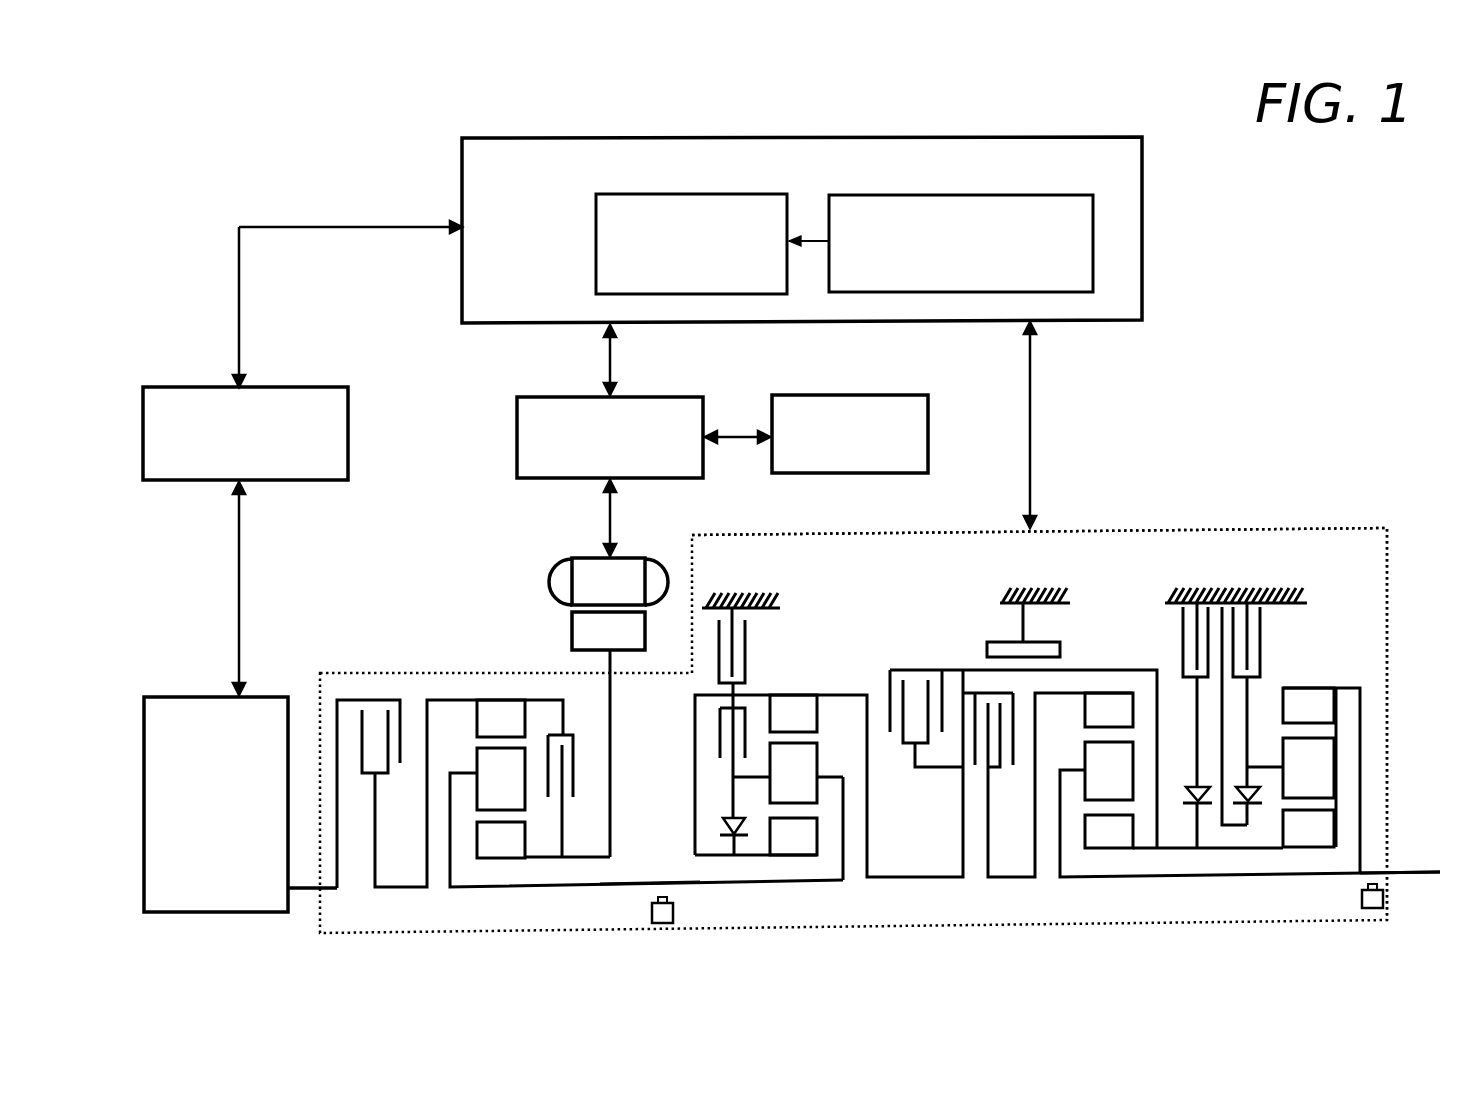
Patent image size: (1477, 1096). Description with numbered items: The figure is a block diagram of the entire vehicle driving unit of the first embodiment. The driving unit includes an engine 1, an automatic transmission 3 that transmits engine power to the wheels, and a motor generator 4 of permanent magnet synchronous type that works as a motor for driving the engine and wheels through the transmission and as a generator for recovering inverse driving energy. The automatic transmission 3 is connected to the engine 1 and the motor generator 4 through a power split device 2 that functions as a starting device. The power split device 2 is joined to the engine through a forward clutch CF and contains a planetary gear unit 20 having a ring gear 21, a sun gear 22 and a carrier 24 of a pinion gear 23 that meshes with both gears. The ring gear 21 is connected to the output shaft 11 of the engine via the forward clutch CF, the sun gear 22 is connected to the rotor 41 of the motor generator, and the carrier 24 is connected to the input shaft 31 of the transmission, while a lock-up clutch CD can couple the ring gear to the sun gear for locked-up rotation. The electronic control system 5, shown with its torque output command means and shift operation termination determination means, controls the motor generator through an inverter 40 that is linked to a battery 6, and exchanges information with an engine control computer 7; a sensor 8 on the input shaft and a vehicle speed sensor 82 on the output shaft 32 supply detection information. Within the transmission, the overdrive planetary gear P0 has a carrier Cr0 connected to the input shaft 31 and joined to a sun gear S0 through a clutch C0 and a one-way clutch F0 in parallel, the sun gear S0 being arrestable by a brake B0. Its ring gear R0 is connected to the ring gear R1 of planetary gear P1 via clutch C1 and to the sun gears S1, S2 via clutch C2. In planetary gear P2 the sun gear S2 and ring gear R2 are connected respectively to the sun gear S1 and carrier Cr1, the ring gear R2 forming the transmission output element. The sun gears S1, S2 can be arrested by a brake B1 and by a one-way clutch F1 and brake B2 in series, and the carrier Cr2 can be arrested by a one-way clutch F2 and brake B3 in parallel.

The engine 1 is at (193, 696).
The power split device 2 is at (438, 673).
The automatic transmission 3 is at (1133, 530).
The motor generator 4 is at (546, 559).
The electronic control system 5 is at (1142, 243).
The battery 6 is at (928, 418).
The engine control computer 7 is at (348, 430).
The input rotation speed sensor 8 is at (651, 915).
The output shaft 11 is at (308, 895).
The planetary gear unit 20 is at (637, 757).
The ring gear 21 is at (477, 724).
The sun gear 22 is at (527, 847).
The pinion gear 23 is at (513, 789).
The carrier 24 is at (448, 780).
The input shaft 31 is at (661, 884).
The output shaft 32 is at (1413, 878).
The inverter 40 is at (516, 432).
The rotor 41 is at (572, 633).
The vehicle speed sensor 82 is at (1362, 900).
The forward clutch CF is at (358, 688).
The lock-up clutch CD is at (592, 746).
The brake B0 is at (715, 628).
The brake B1 is at (1000, 626).
The brake B2 is at (1167, 626).
The brake B3 is at (1279, 625).
The clutch C0 is at (753, 717).
The clutch C1 is at (1008, 776).
The clutch C2 is at (890, 668).
The planetary gear P0 is at (829, 779).
The planetary gear P1 is at (1165, 760).
The planetary gear P2 is at (1342, 778).
The ring gear R0 is at (817, 712).
The ring gear R1 is at (1085, 714).
The ring gear R2 is at (1336, 707).
The sun gear S0 is at (804, 855).
The sun gear S1 is at (1115, 854).
The sun gear S2 is at (1297, 845).
The carrier Cr0 is at (843, 786).
The carrier Cr1 is at (1073, 769).
The carrier Cr2 is at (1257, 767).
The one-way clutch F0 is at (720, 846).
The one-way clutch F1 is at (1190, 824).
The one-way clutch F2 is at (1252, 834).